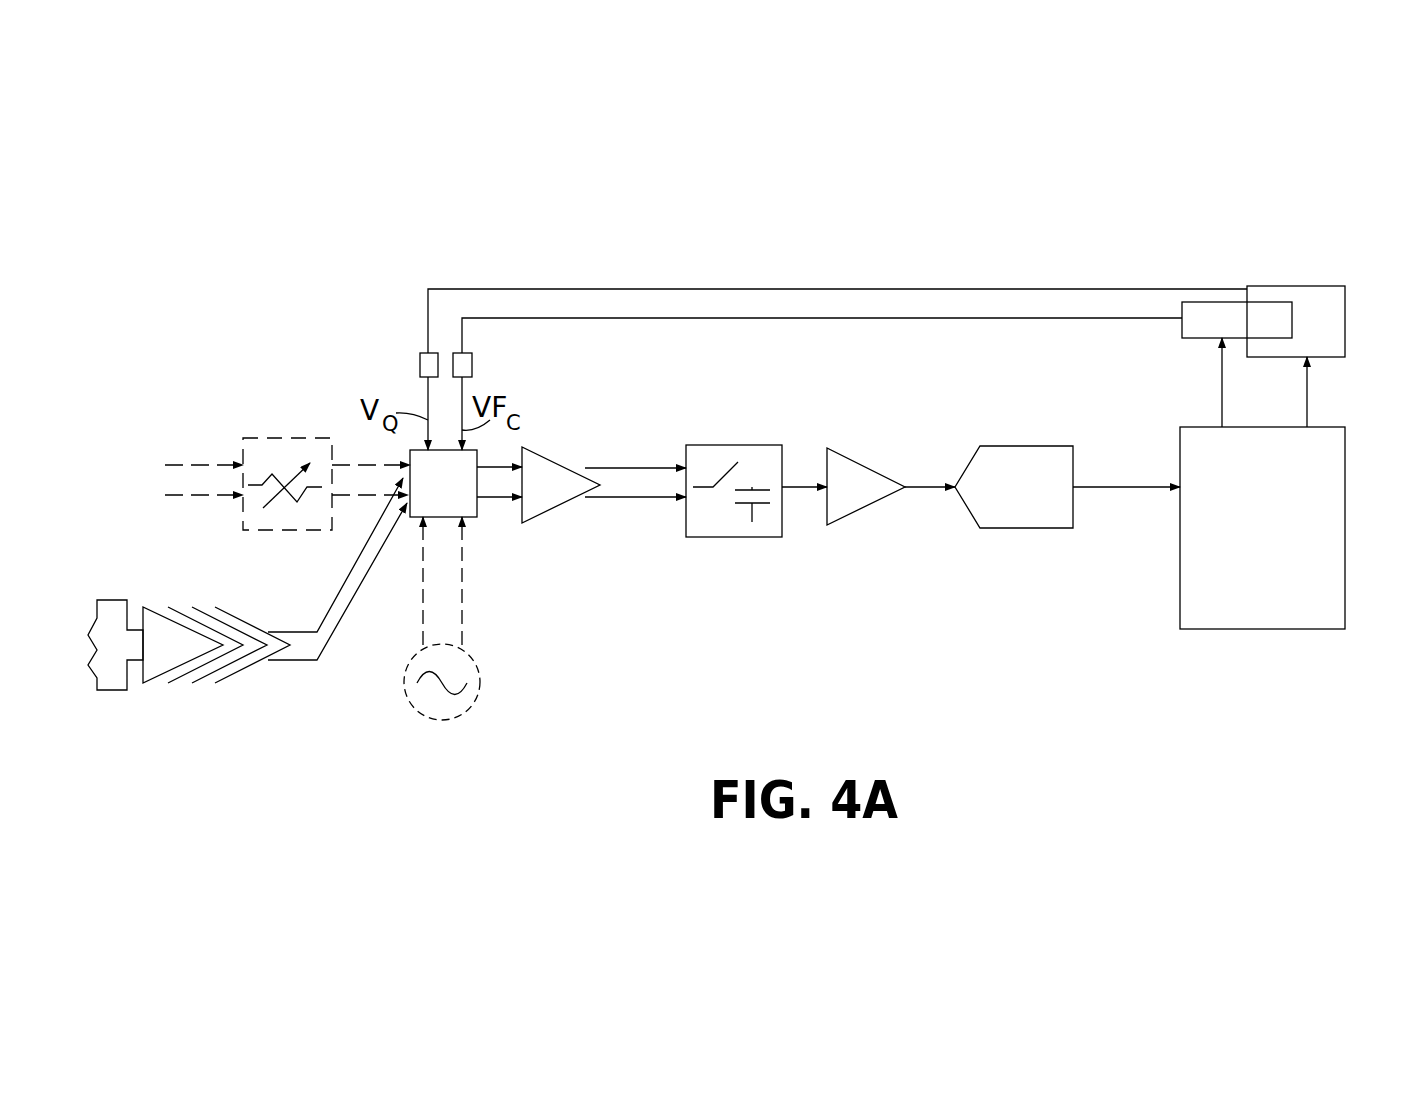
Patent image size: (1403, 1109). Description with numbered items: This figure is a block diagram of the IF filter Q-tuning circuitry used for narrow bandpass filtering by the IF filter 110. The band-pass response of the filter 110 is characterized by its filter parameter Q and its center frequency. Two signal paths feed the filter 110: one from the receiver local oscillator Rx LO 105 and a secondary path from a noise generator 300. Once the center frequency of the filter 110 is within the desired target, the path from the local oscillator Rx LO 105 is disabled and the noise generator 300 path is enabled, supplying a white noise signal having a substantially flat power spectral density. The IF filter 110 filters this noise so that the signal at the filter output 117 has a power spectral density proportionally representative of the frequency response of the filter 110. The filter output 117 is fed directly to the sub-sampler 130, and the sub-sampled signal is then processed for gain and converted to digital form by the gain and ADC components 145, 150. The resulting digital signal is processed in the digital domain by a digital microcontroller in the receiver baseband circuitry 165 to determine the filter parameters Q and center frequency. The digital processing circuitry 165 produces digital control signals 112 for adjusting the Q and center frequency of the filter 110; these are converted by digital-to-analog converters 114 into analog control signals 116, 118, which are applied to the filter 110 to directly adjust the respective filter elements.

The local oscillator Rx LO 105 is at (457, 717).
The IF filter 110 is at (467, 502).
The digital control signals 112 is at (1223, 388).
The digital-to-analog converters 114 is at (1320, 322).
The analog control signal 116 is at (703, 288).
The analog control signal 118 is at (928, 318).
The filter output 117 is at (478, 470).
The sub-sampler 130 is at (722, 455).
The gain component 145 is at (870, 483).
The ADC component 150 is at (1015, 443).
The receiver baseband circuitry 165 is at (1205, 438).
The noise generator 300 is at (172, 657).